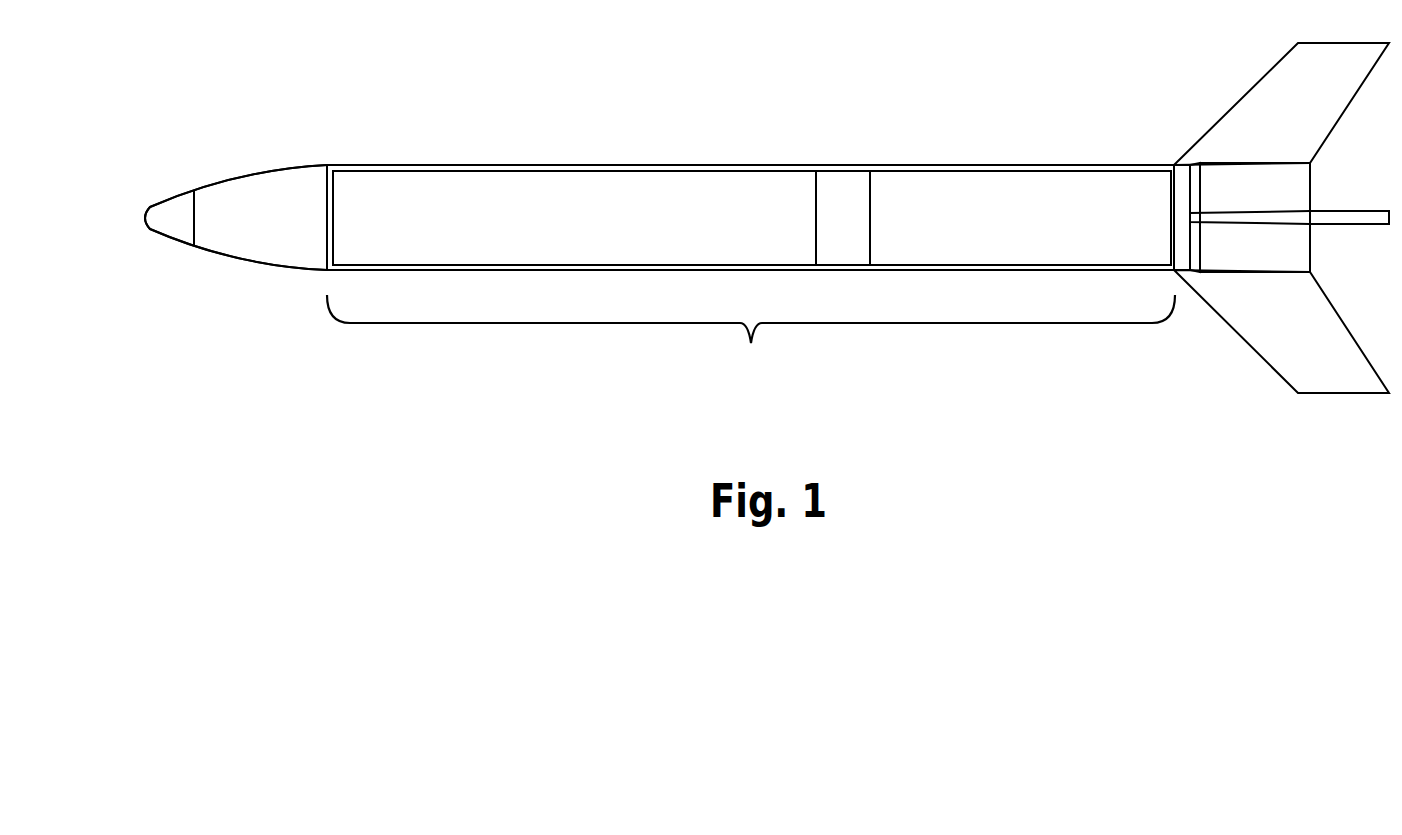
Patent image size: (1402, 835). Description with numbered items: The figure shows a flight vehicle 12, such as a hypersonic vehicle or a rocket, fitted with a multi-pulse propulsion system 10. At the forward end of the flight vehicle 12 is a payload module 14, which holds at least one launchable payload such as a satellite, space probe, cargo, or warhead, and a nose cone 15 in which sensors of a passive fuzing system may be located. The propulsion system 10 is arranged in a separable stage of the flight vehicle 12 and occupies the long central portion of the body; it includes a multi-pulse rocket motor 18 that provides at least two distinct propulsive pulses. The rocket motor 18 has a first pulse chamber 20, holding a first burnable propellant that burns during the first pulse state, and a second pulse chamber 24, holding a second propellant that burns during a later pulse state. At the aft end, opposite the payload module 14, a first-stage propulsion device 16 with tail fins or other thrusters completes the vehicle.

The propulsion system 10 is at (751, 336).
The flight vehicle 12 is at (280, 100).
The payload module 14 is at (242, 202).
The nose cone 15 is at (178, 217).
The first-stage propulsion device 16 is at (1230, 176).
The multi-pulse rocket motor 18 is at (524, 158).
The first pulse chamber 20 is at (982, 205).
The second pulse chamber 24 is at (627, 207).